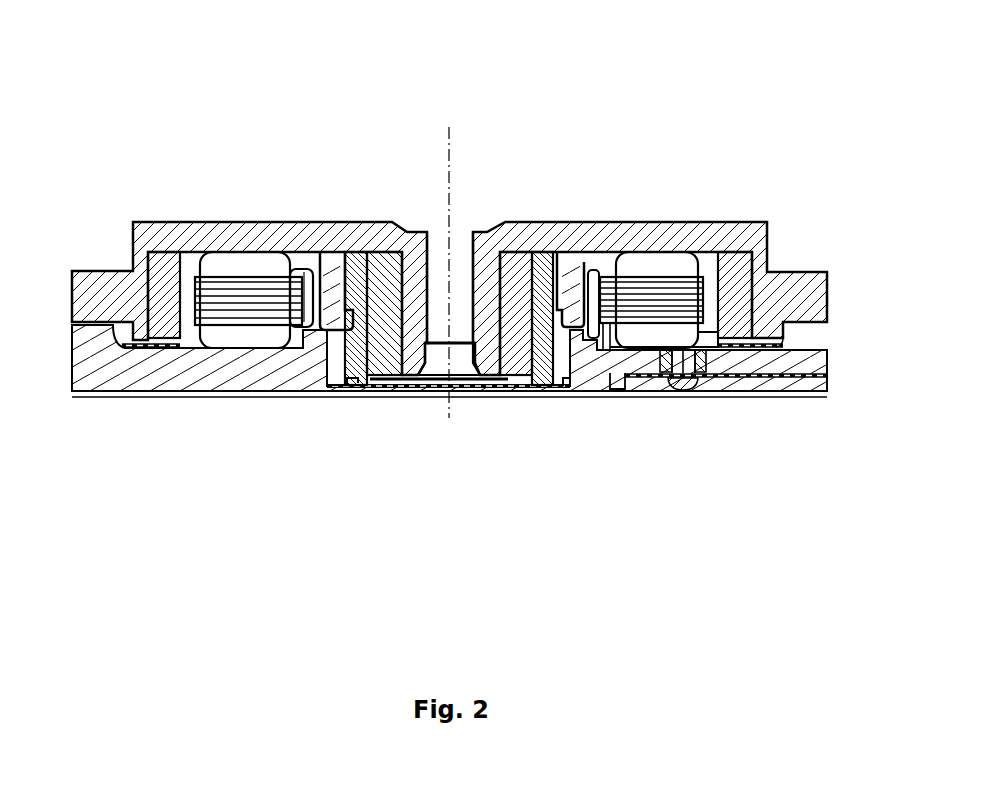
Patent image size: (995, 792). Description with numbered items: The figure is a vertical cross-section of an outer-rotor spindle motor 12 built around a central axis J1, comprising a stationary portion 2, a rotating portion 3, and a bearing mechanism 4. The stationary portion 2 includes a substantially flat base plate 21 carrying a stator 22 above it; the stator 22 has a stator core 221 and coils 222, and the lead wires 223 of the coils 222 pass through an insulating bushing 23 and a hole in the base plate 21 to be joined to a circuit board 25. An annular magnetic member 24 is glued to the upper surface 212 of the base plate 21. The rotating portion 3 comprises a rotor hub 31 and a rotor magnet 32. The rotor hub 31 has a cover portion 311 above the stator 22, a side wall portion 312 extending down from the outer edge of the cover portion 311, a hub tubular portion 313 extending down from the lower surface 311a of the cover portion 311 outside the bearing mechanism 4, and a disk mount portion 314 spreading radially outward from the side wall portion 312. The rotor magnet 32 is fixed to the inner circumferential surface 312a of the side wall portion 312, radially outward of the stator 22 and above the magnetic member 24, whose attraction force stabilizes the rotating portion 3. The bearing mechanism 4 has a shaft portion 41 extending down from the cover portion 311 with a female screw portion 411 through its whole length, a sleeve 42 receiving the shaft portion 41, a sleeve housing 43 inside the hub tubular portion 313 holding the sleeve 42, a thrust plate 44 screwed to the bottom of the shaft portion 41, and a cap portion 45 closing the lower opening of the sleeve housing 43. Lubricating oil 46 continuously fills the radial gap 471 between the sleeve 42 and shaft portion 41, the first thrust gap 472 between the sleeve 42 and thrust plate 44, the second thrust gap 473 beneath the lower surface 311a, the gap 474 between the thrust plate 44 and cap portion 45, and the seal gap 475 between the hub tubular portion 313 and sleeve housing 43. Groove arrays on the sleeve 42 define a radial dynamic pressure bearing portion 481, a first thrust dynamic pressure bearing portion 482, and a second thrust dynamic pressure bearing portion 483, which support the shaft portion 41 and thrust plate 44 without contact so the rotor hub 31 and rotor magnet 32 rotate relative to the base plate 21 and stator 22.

The stationary portion 2 is at (612, 570).
The base plate 21 is at (583, 382).
The upper surface 212 is at (593, 380).
The stator 22 is at (657, 482).
The stator core 221 is at (662, 350).
The coils 222 is at (682, 385).
The lead wires 223 is at (707, 378).
The insulating bushing 23 is at (743, 378).
The magnetic member 24 is at (770, 368).
The circuit board 25 is at (813, 380).
The rotating portion 3 is at (760, 77).
The rotor hub 31 is at (698, 125).
The cover portion 311 is at (647, 244).
The lower surface 311a is at (730, 265).
The hub tubular portion 313 is at (588, 262).
The rotor magnet 32 is at (745, 275).
The motor 12 is at (203, 92).
The side wall portion 312 is at (135, 268).
The inner circumferential surface 312a is at (173, 268).
The disk mount portion 314 is at (97, 300).
The bearing mechanism 4 is at (347, 508).
The shaft portion 41 is at (375, 342).
The female screw portion 411 is at (435, 232).
The sleeve 42 is at (335, 300).
The sleeve housing 43 is at (300, 332).
The thrust plate 44 is at (420, 358).
The cap portion 45 is at (405, 345).
The lubricating oil 46 is at (232, 342).
The radial gap 471 is at (318, 260).
The first thrust gap 472 is at (495, 385).
The second thrust gap 473 is at (525, 243).
The gap 474 is at (410, 382).
The seal gap 475 is at (270, 254).
The radial dynamic pressure bearing portion 481 is at (352, 254).
The first thrust dynamic pressure bearing portion 482 is at (500, 385).
The second thrust dynamic pressure bearing portion 483 is at (508, 243).
The central axis J1 is at (452, 148).